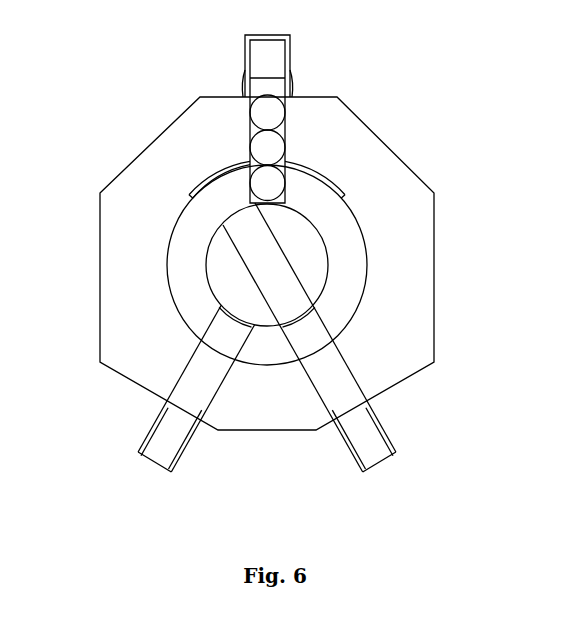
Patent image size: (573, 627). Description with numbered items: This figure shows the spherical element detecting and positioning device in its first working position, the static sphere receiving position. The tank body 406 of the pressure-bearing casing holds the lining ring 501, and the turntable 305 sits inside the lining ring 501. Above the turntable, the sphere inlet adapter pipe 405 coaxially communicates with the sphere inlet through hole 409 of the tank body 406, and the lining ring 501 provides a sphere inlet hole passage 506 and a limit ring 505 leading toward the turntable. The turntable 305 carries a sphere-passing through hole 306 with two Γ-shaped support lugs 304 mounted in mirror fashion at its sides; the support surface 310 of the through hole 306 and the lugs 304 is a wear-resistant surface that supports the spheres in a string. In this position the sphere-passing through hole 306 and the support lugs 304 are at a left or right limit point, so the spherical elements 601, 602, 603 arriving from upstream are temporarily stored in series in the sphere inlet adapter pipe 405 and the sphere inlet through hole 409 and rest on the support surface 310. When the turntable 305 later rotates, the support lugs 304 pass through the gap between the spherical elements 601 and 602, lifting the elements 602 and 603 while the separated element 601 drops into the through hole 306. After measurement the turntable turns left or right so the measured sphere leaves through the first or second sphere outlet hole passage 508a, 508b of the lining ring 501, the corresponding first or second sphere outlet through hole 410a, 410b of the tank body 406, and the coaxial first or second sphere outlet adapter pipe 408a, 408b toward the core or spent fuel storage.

The support lugs 304 is at (228, 182).
The turntable 305 is at (314, 248).
The sphere-passing through hole 306 is at (265, 258).
The support surface 310 is at (281, 200).
The sphere inlet adapter pipe 405 is at (263, 62).
The tank body 406 is at (133, 247).
The first sphere outlet adapter pipe 408a is at (173, 442).
The second sphere outlet adapter pipe 408b is at (362, 428).
The sphere inlet through hole 409 is at (250, 127).
The first sphere outlet through hole 410a is at (197, 383).
The second sphere outlet through hole 410b is at (328, 377).
The lining ring 501 is at (348, 230).
The limit ring 505 is at (218, 172).
The sphere inlet hole passage 506 is at (247, 197).
The first sphere outlet hole passage 508a is at (223, 340).
The second sphere outlet hole passage 508b is at (318, 331).
The spherical element 601 is at (265, 185).
The spherical element 602 is at (268, 147).
The spherical element 603 is at (270, 110).